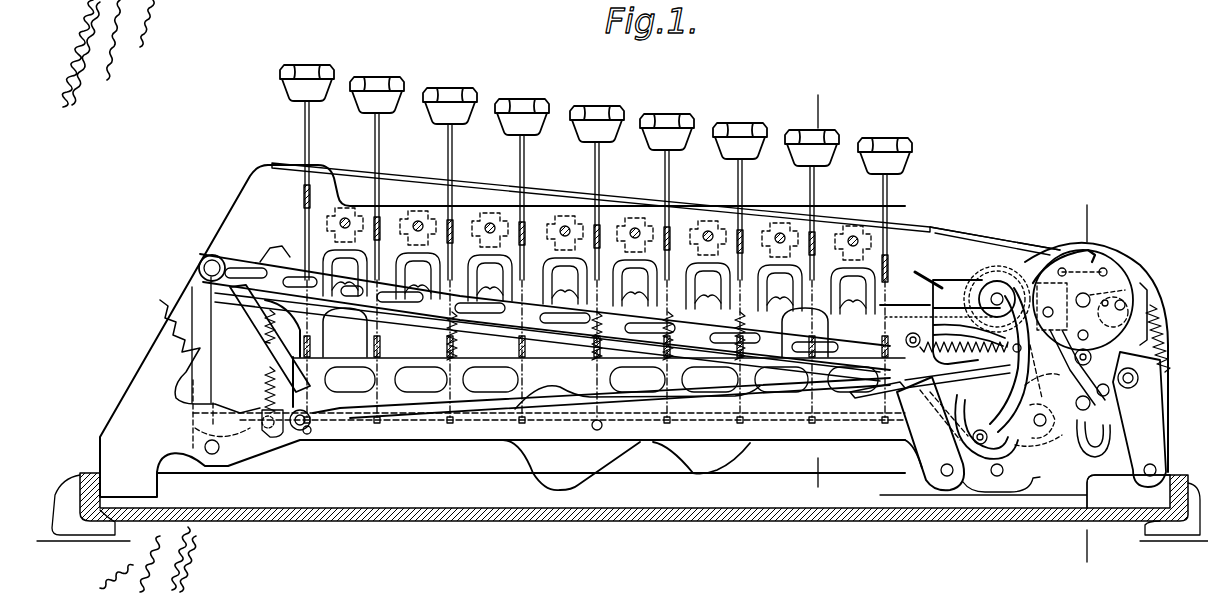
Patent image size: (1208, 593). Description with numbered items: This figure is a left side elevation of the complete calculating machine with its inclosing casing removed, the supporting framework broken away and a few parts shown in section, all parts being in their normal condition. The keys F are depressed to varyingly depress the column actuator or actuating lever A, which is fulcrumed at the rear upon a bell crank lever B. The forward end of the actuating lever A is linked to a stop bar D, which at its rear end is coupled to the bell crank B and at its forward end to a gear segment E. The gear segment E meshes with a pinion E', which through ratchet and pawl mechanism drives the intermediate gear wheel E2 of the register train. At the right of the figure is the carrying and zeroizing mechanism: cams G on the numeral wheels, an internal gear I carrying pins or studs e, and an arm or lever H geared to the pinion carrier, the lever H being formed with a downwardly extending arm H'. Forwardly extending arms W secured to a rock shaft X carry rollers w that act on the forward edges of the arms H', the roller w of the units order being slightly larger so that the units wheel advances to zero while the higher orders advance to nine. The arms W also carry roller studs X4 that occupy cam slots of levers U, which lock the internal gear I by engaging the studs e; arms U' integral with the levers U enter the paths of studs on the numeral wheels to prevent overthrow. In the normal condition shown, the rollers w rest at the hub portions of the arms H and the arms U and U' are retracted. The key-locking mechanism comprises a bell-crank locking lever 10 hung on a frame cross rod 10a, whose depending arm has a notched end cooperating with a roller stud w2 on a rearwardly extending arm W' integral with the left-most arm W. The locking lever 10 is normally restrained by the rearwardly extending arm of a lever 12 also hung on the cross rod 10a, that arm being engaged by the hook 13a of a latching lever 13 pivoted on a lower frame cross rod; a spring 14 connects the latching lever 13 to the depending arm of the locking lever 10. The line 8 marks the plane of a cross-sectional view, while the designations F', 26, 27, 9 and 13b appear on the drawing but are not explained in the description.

The keys F is at (596, 237).
The key bar F' is at (666, 192).
The key lever guide 26 is at (513, 258).
The key lever guide pin 27 is at (635, 233).
The section line 9 is at (821, 287).
The section line 8 is at (1085, 382).
The intermediate gear wheel E2 is at (995, 232).
The pinion E' is at (995, 290).
The frame cross rod 10a is at (1000, 292).
The hook of latching lever 13a is at (915, 272).
The lever 12 is at (942, 311).
The cams G is at (1112, 270).
The internal gear I is at (1135, 290).
The pins or studs e is at (1083, 300).
The arm or lever H is at (1171, 338).
The roller w is at (1119, 403).
The forwardly extending arms W is at (1139, 419).
The downwardly extending arm H' is at (1128, 491).
The roller stud w2 is at (989, 463).
The rearwardly extending arm W' is at (1004, 437).
The arms U' is at (1042, 371).
The levers U is at (1072, 367).
The rock shaft X is at (1039, 418).
The roller studs X4 is at (1038, 436).
The spring 14 is at (958, 350).
The lever arm 13b is at (943, 412).
The locking lever 10 is at (1022, 368).
The latching lever 13 is at (932, 478).
The gear segment E is at (549, 366).
The bell crank lever B is at (210, 380).
The actuating lever A is at (427, 345).
The stop bar D is at (505, 320).